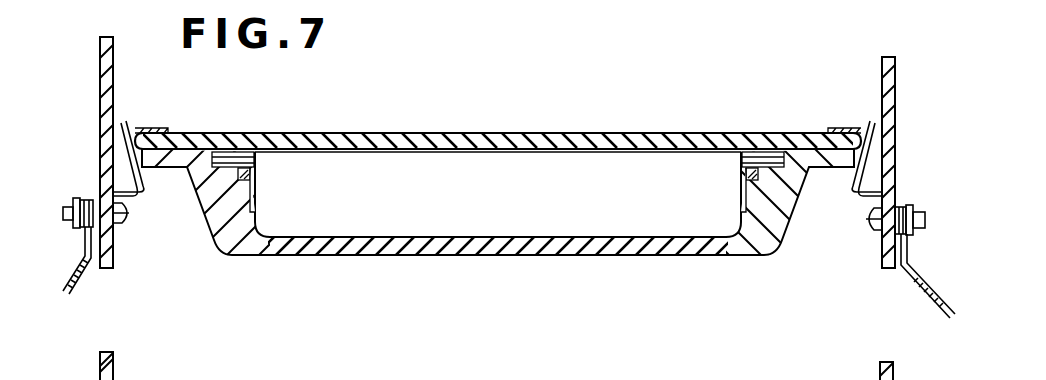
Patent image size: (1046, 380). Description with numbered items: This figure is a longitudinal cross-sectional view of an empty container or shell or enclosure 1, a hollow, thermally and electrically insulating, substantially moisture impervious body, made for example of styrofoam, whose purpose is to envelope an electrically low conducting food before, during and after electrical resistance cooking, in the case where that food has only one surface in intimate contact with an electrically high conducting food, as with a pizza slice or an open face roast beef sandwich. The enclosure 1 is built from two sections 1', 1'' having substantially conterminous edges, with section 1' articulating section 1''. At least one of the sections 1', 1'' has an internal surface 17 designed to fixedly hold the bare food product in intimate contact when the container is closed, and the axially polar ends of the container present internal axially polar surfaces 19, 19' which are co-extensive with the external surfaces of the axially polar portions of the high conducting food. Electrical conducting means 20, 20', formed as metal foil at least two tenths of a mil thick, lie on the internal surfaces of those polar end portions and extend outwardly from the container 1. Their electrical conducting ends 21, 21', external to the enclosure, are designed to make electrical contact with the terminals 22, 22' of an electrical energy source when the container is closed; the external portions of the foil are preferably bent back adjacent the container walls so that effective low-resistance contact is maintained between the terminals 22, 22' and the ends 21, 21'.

The container or shell or enclosure 1 is at (494, 189).
The container section 1' is at (498, 113).
The container section 1'' is at (498, 270).
The internal surface 17 is at (540, 203).
The internal axially polar surface 19 is at (267, 190).
The internal axially polar surface 19' is at (727, 190).
The electrical conducting means 20 is at (233, 121).
The electrical conducting means 20' is at (763, 121).
The electrical conducting end 21 is at (140, 135).
The electrical conducting end 21' is at (855, 135).
The terminal 22 is at (119, 245).
The terminal 22' is at (883, 257).